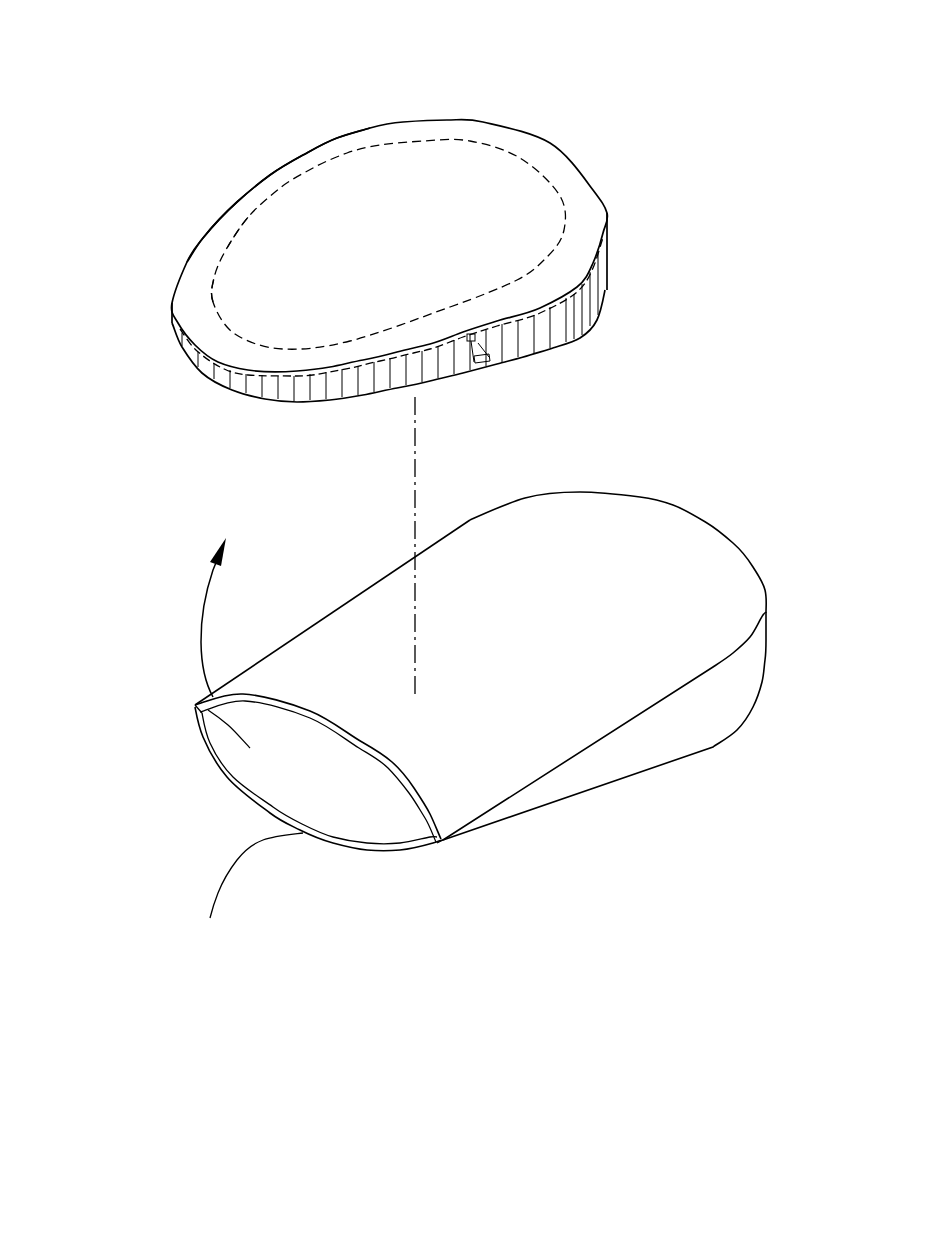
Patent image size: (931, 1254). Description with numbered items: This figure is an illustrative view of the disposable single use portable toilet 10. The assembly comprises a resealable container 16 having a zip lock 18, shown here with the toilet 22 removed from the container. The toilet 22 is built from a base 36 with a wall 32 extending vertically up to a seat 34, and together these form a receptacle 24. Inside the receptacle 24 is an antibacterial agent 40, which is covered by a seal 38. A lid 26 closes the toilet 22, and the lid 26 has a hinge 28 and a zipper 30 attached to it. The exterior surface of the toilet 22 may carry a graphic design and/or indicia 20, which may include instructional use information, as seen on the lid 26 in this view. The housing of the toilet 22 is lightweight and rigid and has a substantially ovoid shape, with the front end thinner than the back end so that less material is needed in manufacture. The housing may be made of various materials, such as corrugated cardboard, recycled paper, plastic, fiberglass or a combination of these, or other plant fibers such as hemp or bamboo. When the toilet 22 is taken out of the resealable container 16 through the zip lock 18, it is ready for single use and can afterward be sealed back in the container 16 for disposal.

The disposable single use portable toilet 10 is at (708, 232).
The resealable container 16 is at (620, 631).
The zip lock 18 is at (367, 742).
The indicia 20 is at (383, 175).
The toilet 22 is at (224, 414).
The receptacle 24 is at (197, 377).
The lid 26 is at (380, 296).
The hinge 28 is at (274, 169).
The zipper 30 is at (487, 353).
The wall 32 is at (570, 312).
The seat 34 is at (220, 247).
The base 36 is at (370, 400).
The seal 38 is at (235, 297).
The antibacterial agent 40 is at (507, 213).